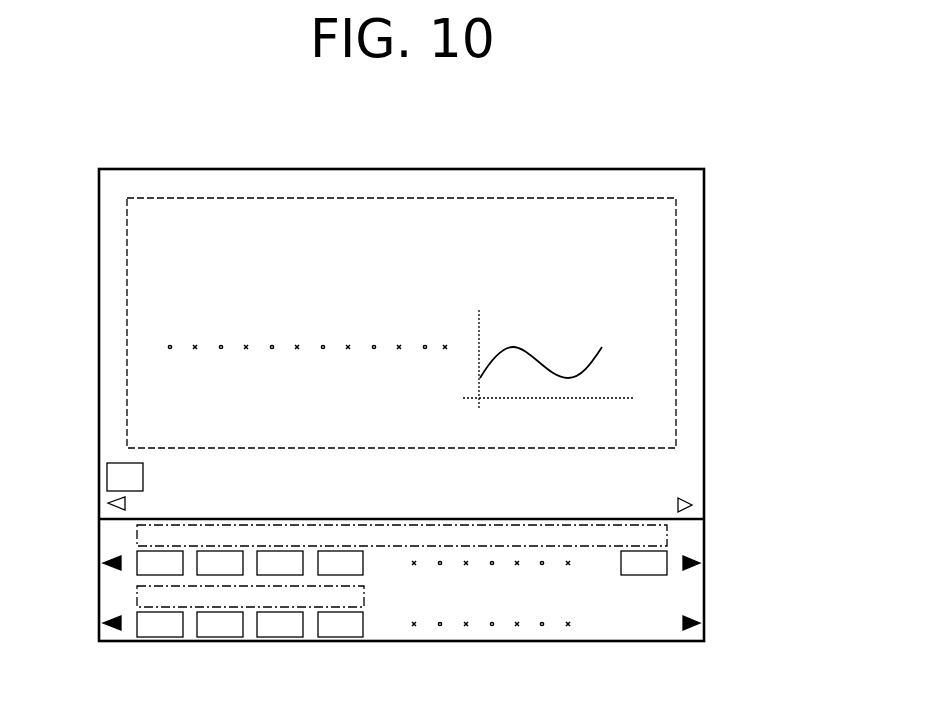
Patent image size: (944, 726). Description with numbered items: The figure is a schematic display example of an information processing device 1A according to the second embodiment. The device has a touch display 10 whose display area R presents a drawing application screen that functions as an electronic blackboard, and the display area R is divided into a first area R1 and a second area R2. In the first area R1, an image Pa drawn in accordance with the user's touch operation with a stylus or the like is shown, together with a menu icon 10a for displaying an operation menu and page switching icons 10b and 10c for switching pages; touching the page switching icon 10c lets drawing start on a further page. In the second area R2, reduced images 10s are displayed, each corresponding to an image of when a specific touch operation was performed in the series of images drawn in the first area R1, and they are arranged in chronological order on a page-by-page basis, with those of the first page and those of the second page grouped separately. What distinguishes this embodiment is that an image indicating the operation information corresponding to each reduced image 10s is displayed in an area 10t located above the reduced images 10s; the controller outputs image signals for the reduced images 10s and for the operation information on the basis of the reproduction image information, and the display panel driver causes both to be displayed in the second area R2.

The information processing device 1A is at (584, 147).
The touch display 10 is at (706, 223).
The image Pa is at (676, 265).
The menu icon 10a is at (145, 466).
The page switching icon 10b is at (127, 503).
The page switching icon 10c is at (692, 503).
The area 10t is at (668, 535).
The reduced image 10s is at (468, 621).
The display area R is at (37, 333).
The first area R1 is at (91, 169).
The second area R2 is at (91, 519).